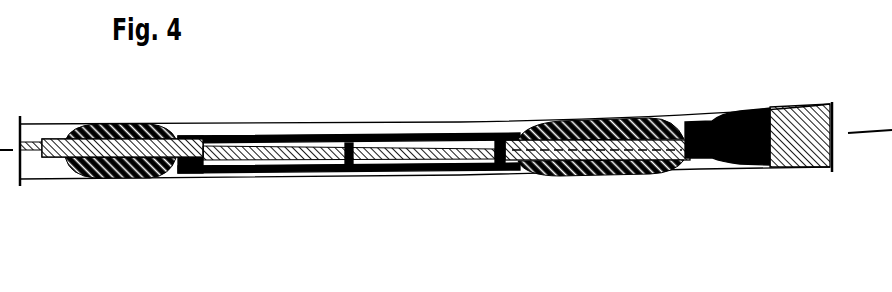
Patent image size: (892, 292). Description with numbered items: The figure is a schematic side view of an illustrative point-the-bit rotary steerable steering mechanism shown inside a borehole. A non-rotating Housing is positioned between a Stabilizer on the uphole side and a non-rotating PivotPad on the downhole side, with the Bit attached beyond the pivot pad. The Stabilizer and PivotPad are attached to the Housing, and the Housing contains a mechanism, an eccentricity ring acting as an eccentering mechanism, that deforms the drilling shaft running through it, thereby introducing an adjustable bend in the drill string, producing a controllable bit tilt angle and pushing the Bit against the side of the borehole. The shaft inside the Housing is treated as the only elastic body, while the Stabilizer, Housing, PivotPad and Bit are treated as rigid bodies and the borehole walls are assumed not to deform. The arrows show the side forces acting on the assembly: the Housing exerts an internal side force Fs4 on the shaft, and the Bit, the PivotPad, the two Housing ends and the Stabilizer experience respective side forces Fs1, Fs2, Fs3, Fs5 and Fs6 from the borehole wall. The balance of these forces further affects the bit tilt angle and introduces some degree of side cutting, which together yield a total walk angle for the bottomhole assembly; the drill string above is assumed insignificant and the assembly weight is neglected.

The side force on the bit Fs1 is at (760, 109).
The side force on the pivot pad Fs2 is at (568, 178).
The side force on the housing end Fs3 is at (525, 132).
The internal side force Fs4 is at (352, 181).
The side force on the housing end Fs5 is at (183, 135).
The side force on the stabilizer Fs6 is at (95, 121).
The stabilizer Stabilizer is at (111, 144).
The non-rotating housing Housing is at (281, 169).
The non-rotating pivot pad PivotPad is at (584, 161).
The bit Bit is at (757, 127).